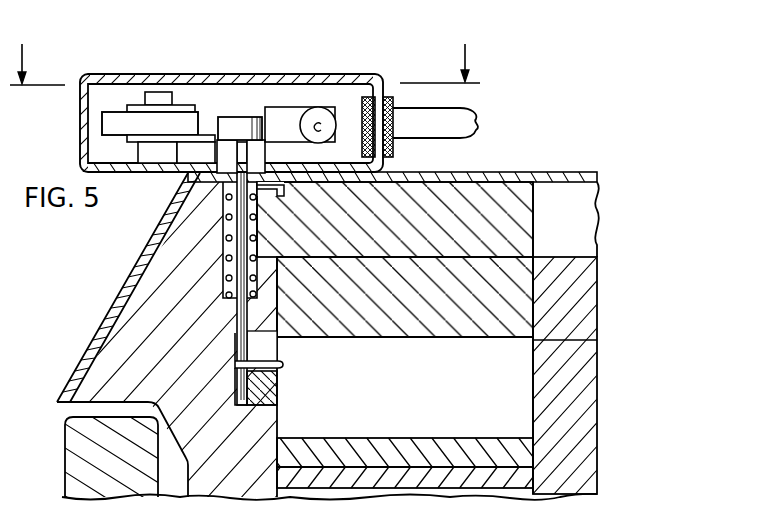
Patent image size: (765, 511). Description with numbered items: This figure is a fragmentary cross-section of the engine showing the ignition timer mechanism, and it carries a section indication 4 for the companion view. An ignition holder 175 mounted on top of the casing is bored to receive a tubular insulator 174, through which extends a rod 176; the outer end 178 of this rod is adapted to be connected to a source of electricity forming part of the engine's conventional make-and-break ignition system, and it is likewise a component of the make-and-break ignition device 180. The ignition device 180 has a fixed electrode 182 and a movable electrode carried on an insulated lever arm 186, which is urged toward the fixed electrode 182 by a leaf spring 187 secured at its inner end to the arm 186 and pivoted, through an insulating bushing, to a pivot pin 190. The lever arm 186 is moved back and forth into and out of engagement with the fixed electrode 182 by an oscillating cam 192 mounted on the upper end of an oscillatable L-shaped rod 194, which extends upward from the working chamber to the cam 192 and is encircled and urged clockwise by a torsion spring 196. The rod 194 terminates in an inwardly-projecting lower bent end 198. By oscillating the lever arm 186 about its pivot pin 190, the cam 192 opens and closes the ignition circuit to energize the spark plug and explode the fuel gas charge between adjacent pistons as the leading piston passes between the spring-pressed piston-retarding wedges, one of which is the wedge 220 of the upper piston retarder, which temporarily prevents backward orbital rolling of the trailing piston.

The section line 4- 4 is at (244, 52).
The tubular insulator 174 is at (393, 147).
The ignition holder 175 is at (238, 76).
The rod 176 is at (336, 133).
The outer end 178 is at (478, 116).
The make-and-break ignition device 180 is at (133, 47).
The fixed electrode 182 is at (326, 118).
The insulated lever arm 186 is at (245, 105).
The leaf spring 187 is at (190, 122).
The pivot pin 190 is at (155, 90).
The oscillating cam 192 is at (250, 123).
The oscillatable L-shaped rod 194 is at (247, 160).
The torsion spring 196 is at (222, 200).
The inwardly-projecting lower bent end 198 is at (283, 365).
The spring-pressed piston-retarding wedge 220 is at (278, 390).